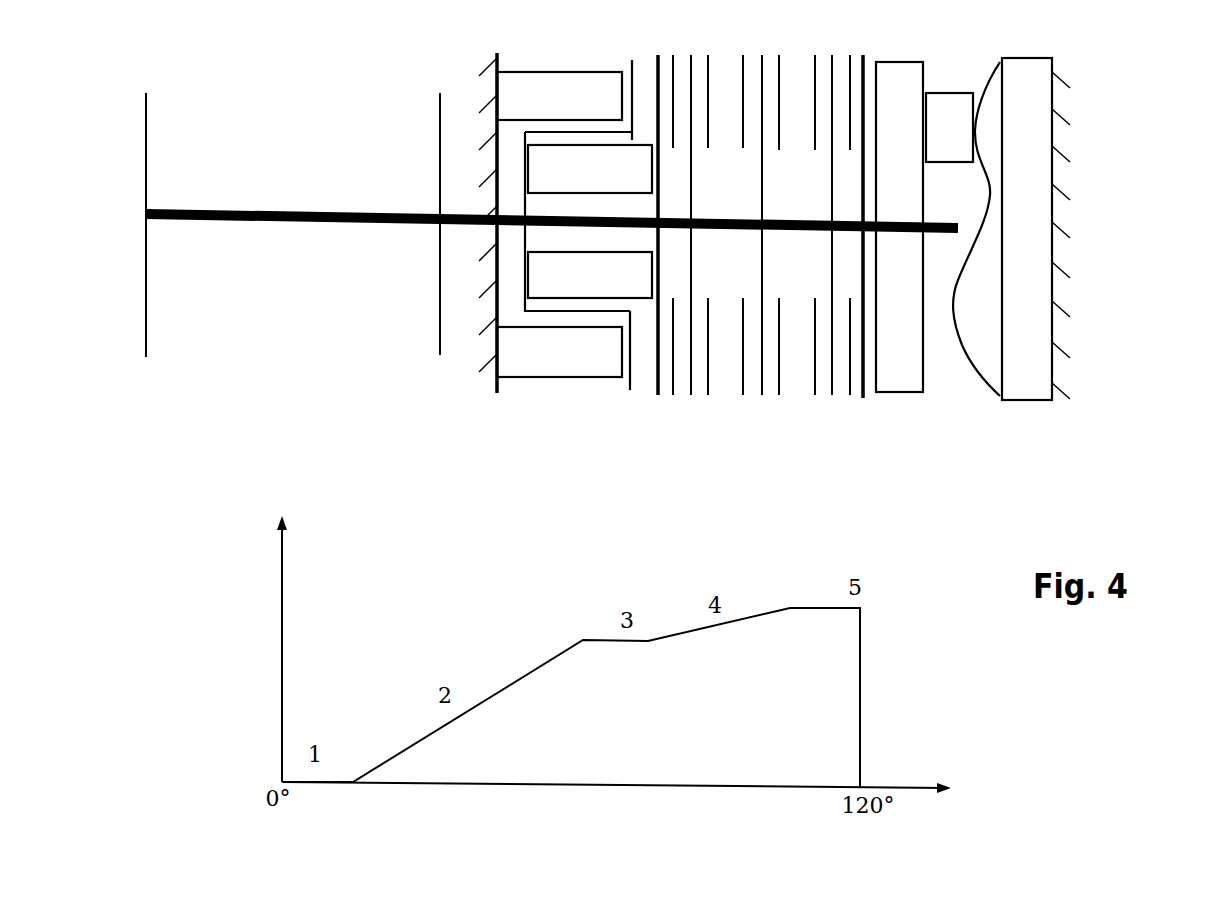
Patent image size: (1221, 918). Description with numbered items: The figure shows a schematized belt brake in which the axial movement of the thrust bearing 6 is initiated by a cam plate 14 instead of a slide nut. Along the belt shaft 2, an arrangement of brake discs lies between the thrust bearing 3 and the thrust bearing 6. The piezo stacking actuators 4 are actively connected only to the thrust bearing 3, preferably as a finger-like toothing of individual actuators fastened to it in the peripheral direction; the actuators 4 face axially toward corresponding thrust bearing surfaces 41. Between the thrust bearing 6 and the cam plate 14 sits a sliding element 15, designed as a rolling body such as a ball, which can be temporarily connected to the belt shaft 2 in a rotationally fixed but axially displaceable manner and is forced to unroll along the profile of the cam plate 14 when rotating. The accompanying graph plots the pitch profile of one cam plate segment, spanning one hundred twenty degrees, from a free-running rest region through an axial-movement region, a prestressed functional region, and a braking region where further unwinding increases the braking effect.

The belt shaft 2 is at (787, 231).
The thrust bearing 3 is at (492, 338).
The piezo actuator elements 4 is at (595, 297).
The thrust bearing surfaces 41 is at (655, 383).
The thrust bearing 6 is at (923, 358).
The cam plate 14 is at (980, 265).
The sliding element 15 is at (973, 103).